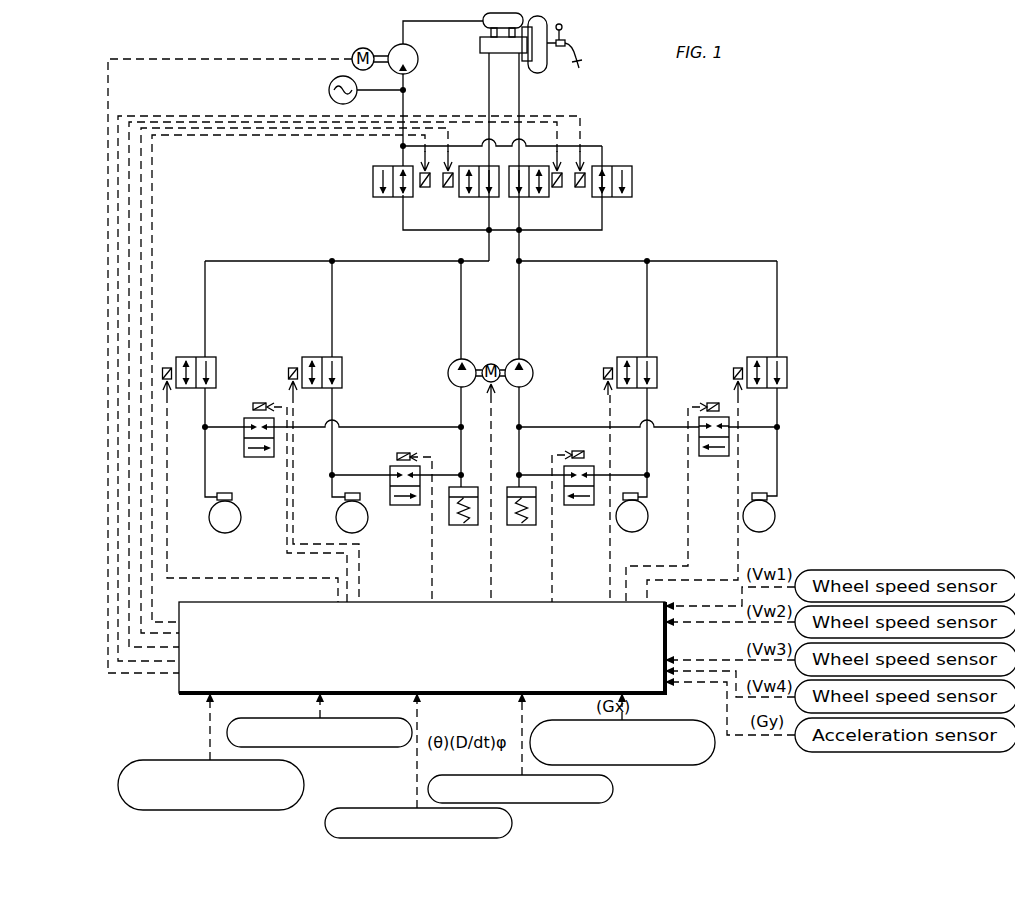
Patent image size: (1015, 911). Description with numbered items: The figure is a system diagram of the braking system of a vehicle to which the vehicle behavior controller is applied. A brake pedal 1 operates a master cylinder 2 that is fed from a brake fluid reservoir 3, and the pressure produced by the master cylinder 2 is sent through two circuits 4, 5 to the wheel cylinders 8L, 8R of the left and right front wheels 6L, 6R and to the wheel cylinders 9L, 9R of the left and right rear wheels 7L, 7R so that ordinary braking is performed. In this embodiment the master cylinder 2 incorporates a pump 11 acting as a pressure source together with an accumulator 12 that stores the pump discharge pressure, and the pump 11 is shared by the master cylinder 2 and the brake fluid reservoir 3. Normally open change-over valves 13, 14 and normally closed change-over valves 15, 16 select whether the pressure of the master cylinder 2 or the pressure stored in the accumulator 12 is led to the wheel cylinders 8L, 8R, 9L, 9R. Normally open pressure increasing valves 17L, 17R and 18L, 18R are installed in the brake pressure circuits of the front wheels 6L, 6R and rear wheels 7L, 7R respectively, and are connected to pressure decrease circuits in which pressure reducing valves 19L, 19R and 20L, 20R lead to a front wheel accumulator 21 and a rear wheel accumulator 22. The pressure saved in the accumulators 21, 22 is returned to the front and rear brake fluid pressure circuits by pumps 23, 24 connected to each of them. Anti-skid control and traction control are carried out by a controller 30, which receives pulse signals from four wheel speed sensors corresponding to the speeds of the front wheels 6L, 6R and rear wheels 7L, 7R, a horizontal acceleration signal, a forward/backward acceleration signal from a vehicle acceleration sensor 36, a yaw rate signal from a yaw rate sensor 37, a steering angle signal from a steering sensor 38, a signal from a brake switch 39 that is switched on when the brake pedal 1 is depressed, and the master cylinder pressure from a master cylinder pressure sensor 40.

The brake pedal 1 is at (584, 65).
The master cylinder 2 is at (480, 50).
The brake fluid reservoir 3 is at (478, 29).
The circuit 4 is at (488, 88).
The circuit 5 is at (520, 91).
The left front wheel 6L is at (216, 530).
The right front wheel 6R is at (338, 512).
The left rear wheel 7L is at (645, 527).
The right rear wheel 7R is at (775, 516).
The wheel cylinder 8L is at (232, 493).
The wheel cylinder 8R is at (360, 497).
The wheel cylinder 9L is at (638, 496).
The wheel cylinder 9R is at (760, 492).
The pump 11 is at (393, 48).
The accumulator 12 is at (329, 90).
The change-over valve 13 is at (463, 197).
The change-over valve 14 is at (540, 197).
The change-over valve 15 is at (373, 181).
The change-over valve 16 is at (632, 178).
The pressure increasing valve 17L is at (184, 356).
The pressure increasing valve 17R is at (308, 356).
The pressure increasing valve 18L is at (655, 356).
The pressure increasing valve 18R is at (787, 365).
The pressure reducing valve 19L is at (247, 418).
The pressure reducing valve 19R is at (397, 457).
The pressure reducing valve 20L is at (570, 451).
The pressure reducing valve 20R is at (712, 402).
The front wheel accumulator 21 is at (463, 526).
The rear wheel accumulator 22 is at (523, 526).
The pump 23 is at (448, 372).
The pump 24 is at (533, 372).
The controller 30 is at (179, 693).
The vehicle acceleration sensor 36 is at (712, 762).
The yaw rate sensor 37 is at (614, 790).
The steering sensor 38 is at (513, 823).
The brake switch 39 is at (387, 748).
The master cylinder pressure sensor 40 is at (304, 785).